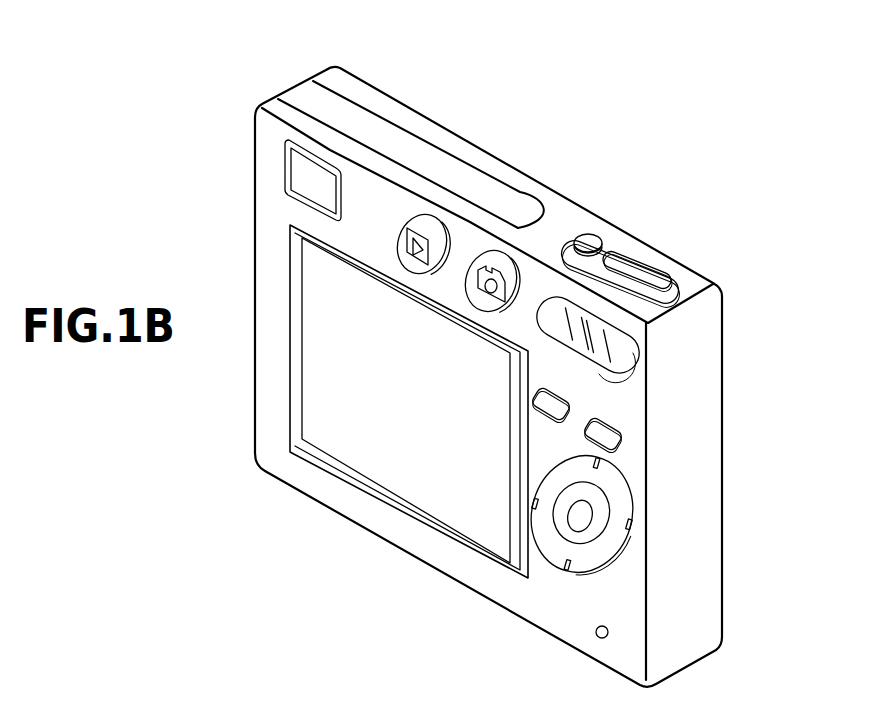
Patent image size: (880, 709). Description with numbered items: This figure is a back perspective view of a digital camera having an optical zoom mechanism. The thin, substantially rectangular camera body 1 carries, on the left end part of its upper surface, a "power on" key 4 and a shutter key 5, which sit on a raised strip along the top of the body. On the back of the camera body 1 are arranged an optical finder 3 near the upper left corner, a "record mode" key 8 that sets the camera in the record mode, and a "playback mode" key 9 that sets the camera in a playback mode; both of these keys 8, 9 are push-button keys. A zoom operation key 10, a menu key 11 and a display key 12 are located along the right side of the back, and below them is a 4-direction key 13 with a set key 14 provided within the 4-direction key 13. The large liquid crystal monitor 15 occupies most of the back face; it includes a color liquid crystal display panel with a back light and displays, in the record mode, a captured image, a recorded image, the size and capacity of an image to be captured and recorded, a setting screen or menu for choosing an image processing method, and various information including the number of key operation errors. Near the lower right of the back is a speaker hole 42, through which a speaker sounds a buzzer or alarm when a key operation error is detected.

The camera body 1 is at (388, 98).
The optical finder 3 is at (310, 177).
The "power on" key 4 is at (592, 237).
The shutter key 5 is at (635, 267).
The "record mode" key 8 is at (497, 263).
The "playback mode" key 9 is at (420, 232).
The zoom operation key 10 is at (627, 358).
The menu key 11 is at (570, 414).
The display key 12 is at (622, 447).
The 4-direction key 13 is at (608, 500).
The set key 14 is at (580, 520).
The liquid crystal monitor 15 is at (400, 443).
The speaker hole 42 is at (596, 633).